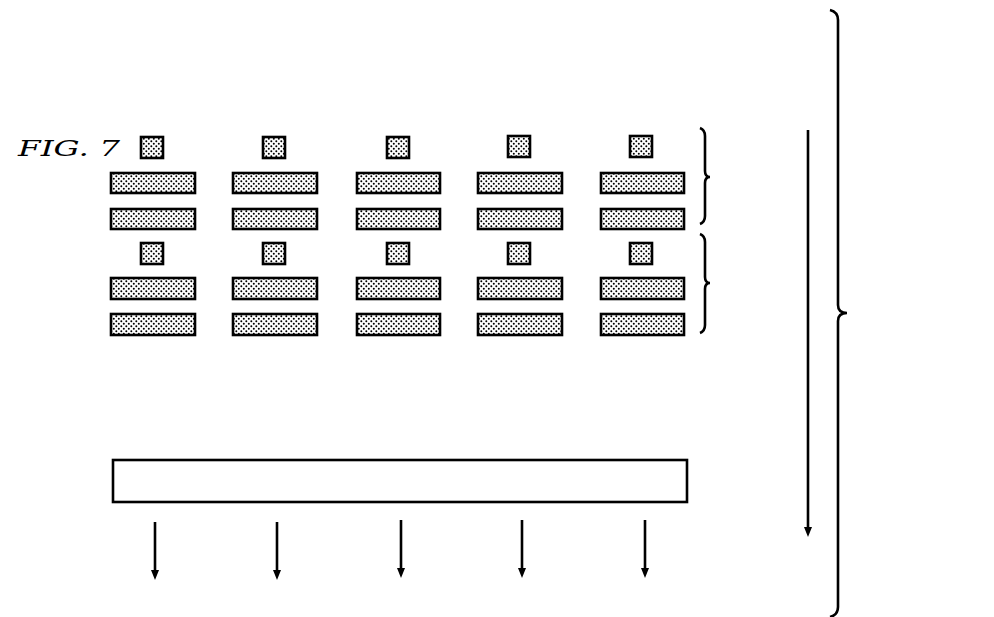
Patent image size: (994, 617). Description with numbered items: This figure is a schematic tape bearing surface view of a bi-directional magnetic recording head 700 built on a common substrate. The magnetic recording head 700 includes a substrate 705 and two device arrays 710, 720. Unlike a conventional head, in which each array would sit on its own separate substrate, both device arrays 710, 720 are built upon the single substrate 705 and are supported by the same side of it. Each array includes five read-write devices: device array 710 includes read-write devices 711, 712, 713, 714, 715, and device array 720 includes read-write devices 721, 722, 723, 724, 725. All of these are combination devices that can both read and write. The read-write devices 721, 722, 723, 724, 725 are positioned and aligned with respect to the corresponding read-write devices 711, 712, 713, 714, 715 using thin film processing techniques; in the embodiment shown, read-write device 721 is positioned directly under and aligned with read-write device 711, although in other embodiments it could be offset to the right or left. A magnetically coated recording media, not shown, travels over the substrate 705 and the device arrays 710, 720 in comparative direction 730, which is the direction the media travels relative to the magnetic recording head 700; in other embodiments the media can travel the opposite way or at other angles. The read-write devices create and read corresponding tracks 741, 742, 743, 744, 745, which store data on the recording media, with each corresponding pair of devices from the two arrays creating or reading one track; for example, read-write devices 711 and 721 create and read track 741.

The magnetic recording head 700 is at (748, 60).
The substrate 705 is at (113, 482).
The device array 710 is at (433, 121).
The read-write device 711 is at (150, 128).
The read-write device 712 is at (273, 127).
The read-write device 713 is at (398, 127).
The read-write device 714 is at (525, 122).
The read-write device 715 is at (647, 122).
The device array 720 is at (435, 337).
The read-write device 721 is at (153, 342).
The read-write device 722 is at (275, 342).
The read-write device 723 is at (400, 338).
The read-write device 724 is at (522, 338).
The read-write device 725 is at (645, 338).
The comparative direction 730 is at (807, 513).
The track 741 is at (155, 547).
The track 742 is at (279, 543).
The track 743 is at (401, 537).
The track 744 is at (523, 543).
The track 745 is at (645, 535).